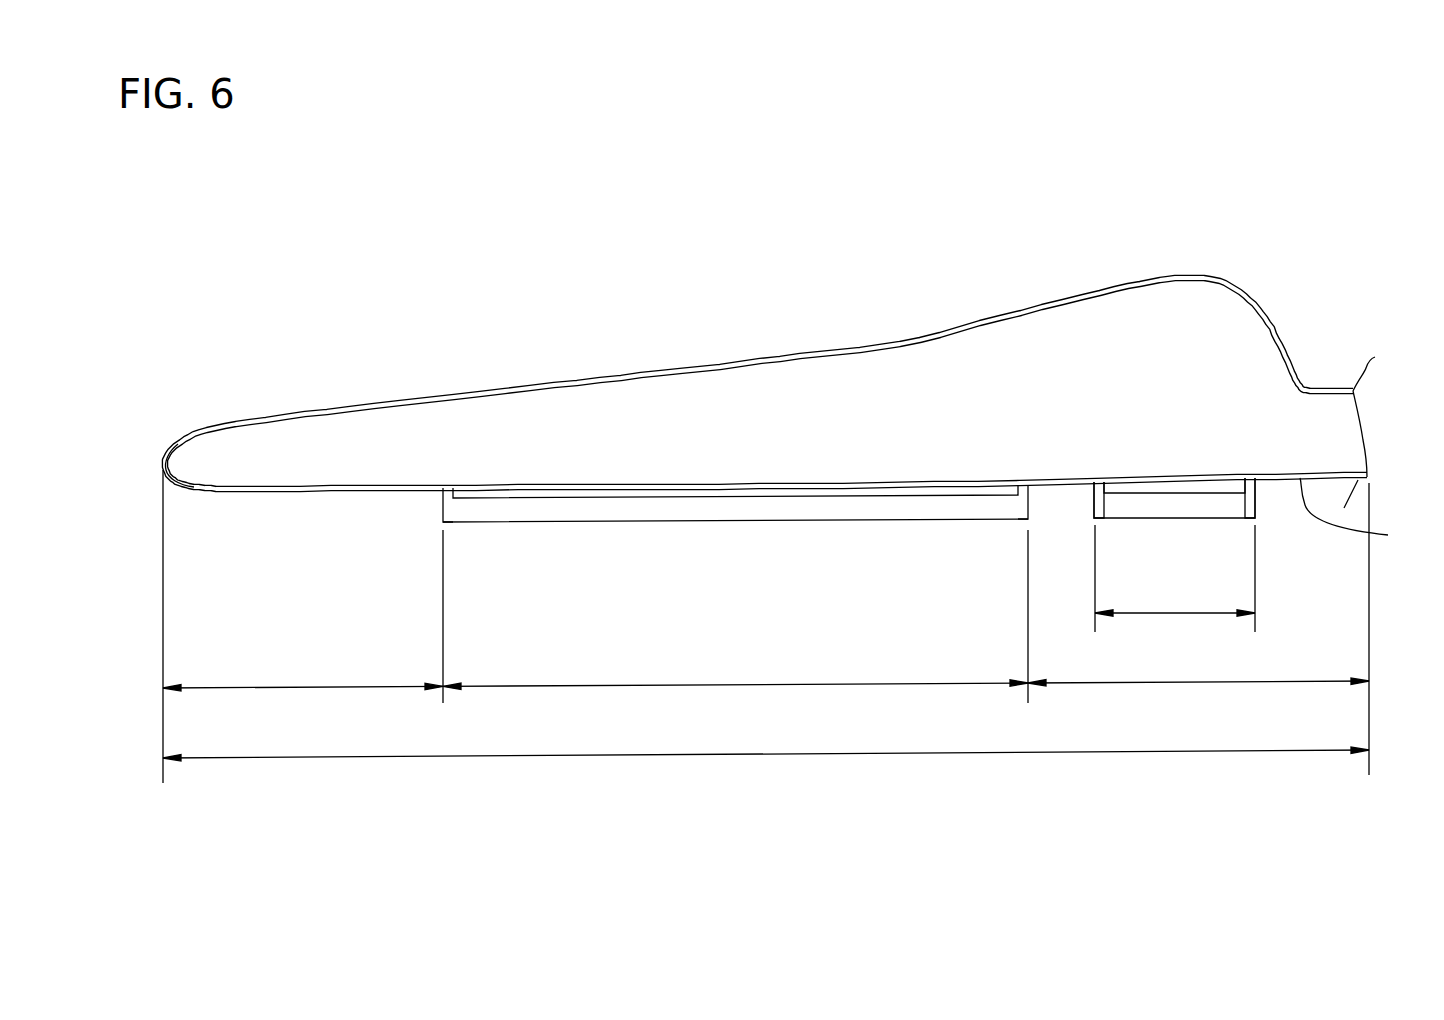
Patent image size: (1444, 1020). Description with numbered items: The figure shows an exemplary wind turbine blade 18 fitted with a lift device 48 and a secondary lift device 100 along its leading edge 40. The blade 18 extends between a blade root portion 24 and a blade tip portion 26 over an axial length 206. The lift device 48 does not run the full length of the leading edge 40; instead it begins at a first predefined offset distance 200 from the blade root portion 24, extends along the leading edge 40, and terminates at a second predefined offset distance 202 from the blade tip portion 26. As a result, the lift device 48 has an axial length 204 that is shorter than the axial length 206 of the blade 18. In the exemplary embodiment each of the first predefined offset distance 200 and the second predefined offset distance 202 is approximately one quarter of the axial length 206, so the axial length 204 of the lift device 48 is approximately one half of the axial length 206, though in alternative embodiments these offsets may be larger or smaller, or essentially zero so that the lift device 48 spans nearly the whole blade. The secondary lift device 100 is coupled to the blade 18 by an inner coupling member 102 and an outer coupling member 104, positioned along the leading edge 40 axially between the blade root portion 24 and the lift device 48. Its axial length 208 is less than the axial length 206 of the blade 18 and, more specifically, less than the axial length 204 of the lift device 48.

The blade 18 is at (266, 234).
The blade tip portion 26 is at (152, 412).
The blade root portion 24 is at (1337, 340).
The leading edge 40 is at (1362, 514).
The lift device 48 is at (745, 561).
The secondary lift device 100 is at (1165, 556).
The inner coupling member 102 is at (1258, 513).
The outer coupling member 104 is at (1092, 502).
The first predefined offset distance 200 is at (1120, 686).
The second predefined offset distance 202 is at (244, 686).
The axial length of lift device 204 is at (598, 686).
The axial length of blade 206 is at (768, 755).
The axial length of secondary lift device 208 is at (1178, 620).